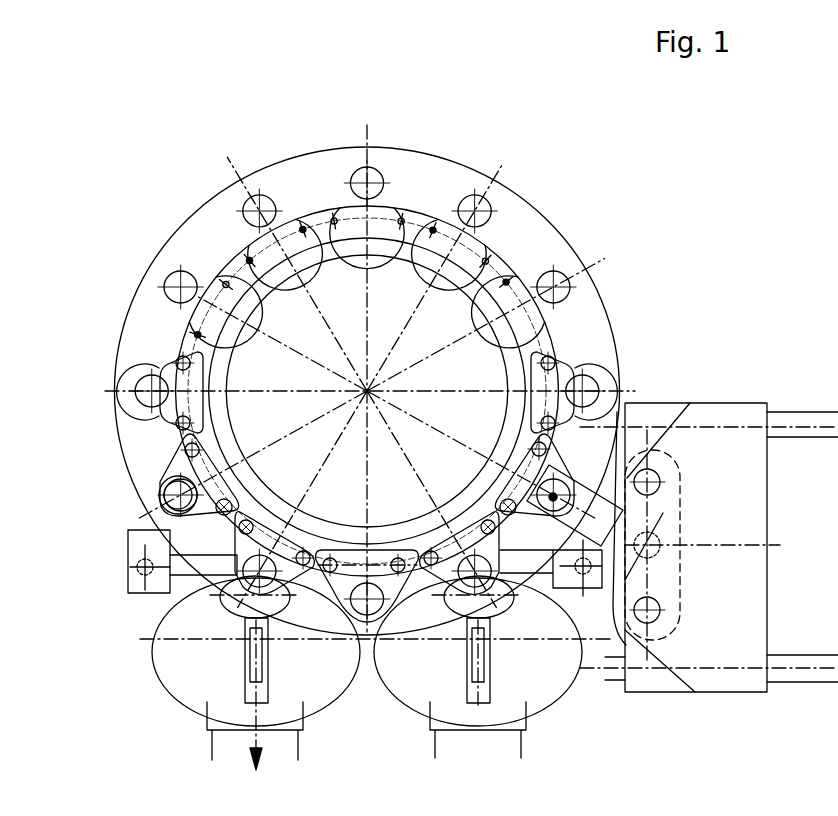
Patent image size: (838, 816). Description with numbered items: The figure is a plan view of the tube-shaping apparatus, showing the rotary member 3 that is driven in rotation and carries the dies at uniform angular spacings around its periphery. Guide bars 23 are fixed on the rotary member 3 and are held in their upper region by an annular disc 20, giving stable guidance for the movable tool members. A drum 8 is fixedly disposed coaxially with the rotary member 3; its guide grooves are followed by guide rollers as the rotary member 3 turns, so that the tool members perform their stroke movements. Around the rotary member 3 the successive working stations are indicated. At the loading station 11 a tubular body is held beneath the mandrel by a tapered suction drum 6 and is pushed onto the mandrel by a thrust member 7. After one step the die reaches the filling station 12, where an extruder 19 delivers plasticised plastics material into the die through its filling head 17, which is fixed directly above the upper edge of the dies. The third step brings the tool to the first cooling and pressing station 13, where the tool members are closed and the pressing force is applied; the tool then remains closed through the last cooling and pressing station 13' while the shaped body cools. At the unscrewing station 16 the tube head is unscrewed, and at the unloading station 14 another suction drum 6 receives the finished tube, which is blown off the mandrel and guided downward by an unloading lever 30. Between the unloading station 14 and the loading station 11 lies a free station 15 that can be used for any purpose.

The rotary member 3 is at (449, 175).
The annular disc 20 is at (318, 233).
The drum 8 is at (403, 258).
The last cooling and pressing station 13' is at (367, 391).
The first cooling and pressing station 13 is at (535, 393).
The guide bars 23 is at (155, 363).
The unscrewing station 16 is at (170, 398).
The unloading station 14 is at (266, 524).
The loading station 11 is at (442, 547).
The free station 15 is at (346, 560).
The filling station 12 is at (516, 483).
The unloading lever 30 is at (177, 556).
The thrust member 7 is at (578, 655).
The suction drum 6 is at (187, 658).
The filling head 17 is at (680, 473).
The extruder 19 is at (663, 502).